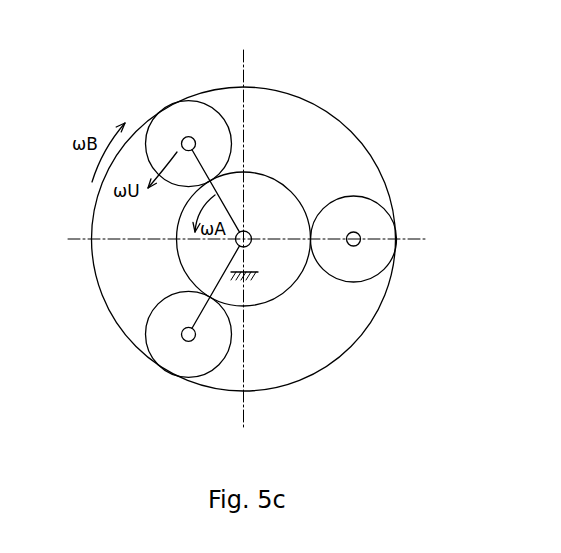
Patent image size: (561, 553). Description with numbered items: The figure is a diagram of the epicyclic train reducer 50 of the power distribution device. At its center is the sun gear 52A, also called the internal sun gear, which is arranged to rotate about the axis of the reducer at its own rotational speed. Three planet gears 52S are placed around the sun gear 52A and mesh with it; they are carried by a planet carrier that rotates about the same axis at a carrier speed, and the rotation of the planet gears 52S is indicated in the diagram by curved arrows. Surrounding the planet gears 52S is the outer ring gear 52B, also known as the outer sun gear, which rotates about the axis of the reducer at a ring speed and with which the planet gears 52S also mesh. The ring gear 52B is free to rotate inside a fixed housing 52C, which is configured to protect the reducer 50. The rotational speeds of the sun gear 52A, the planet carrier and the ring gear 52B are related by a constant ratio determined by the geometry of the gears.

The epicyclic train reducer 50 is at (218, 82).
The sun gear 52A is at (177, 263).
The outer ring gear 52B is at (292, 107).
The fixed housing 52C is at (250, 282).
The planet gears 52S is at (147, 325).